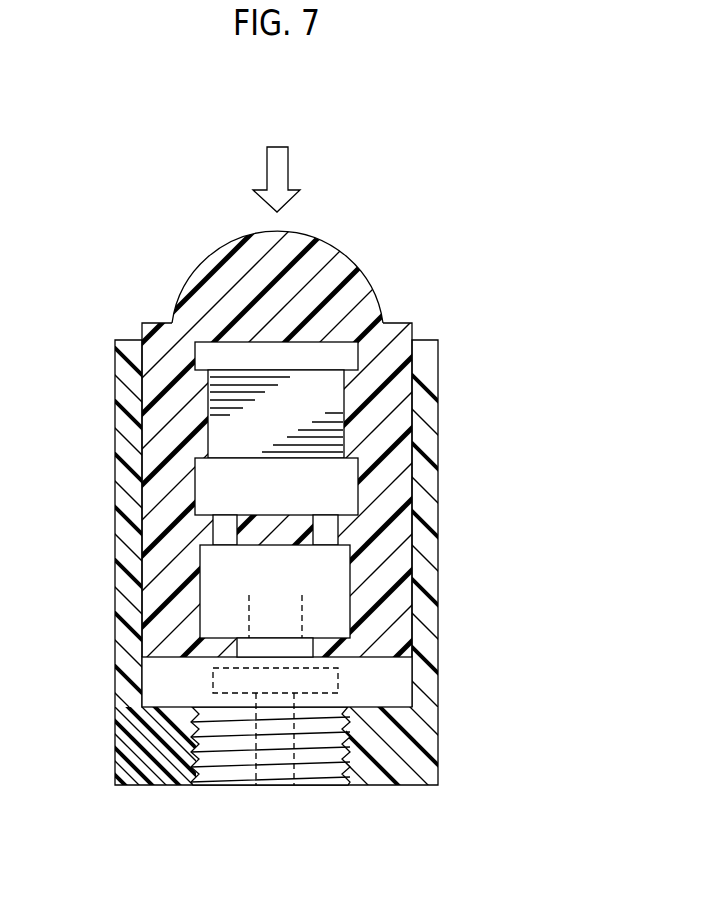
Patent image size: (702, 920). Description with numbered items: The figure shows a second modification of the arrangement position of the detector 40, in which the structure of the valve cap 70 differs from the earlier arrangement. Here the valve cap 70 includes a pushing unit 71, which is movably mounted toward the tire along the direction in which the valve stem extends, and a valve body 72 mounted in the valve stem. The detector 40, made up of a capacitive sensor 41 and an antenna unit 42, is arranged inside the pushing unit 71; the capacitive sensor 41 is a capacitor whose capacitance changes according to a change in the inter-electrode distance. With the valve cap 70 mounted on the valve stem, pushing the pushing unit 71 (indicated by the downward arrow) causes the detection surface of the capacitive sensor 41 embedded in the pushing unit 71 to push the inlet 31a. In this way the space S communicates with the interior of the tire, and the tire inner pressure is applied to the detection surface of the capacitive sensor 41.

The valve cap 70 is at (367, 250).
The pushing unit 71 is at (204, 264).
The valve body 72 is at (115, 571).
The detector 40 is at (384, 499).
The capacitive sensor 41 is at (323, 407).
The antenna unit 42 is at (313, 573).
The space S is at (163, 683).
The inlet 31a is at (338, 687).